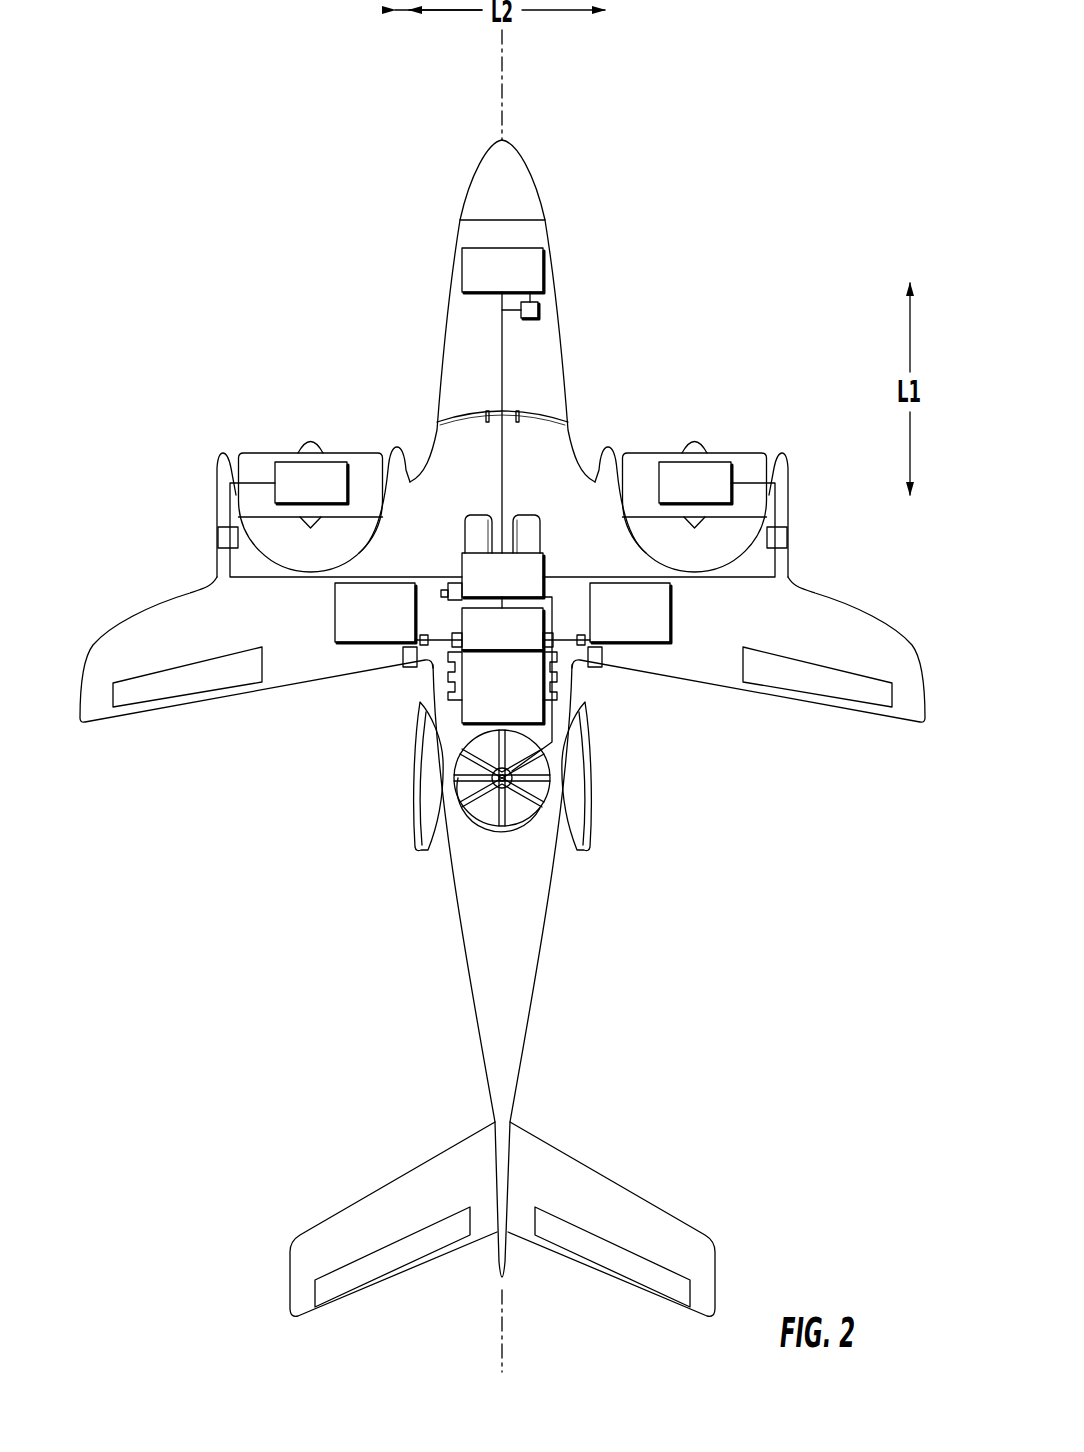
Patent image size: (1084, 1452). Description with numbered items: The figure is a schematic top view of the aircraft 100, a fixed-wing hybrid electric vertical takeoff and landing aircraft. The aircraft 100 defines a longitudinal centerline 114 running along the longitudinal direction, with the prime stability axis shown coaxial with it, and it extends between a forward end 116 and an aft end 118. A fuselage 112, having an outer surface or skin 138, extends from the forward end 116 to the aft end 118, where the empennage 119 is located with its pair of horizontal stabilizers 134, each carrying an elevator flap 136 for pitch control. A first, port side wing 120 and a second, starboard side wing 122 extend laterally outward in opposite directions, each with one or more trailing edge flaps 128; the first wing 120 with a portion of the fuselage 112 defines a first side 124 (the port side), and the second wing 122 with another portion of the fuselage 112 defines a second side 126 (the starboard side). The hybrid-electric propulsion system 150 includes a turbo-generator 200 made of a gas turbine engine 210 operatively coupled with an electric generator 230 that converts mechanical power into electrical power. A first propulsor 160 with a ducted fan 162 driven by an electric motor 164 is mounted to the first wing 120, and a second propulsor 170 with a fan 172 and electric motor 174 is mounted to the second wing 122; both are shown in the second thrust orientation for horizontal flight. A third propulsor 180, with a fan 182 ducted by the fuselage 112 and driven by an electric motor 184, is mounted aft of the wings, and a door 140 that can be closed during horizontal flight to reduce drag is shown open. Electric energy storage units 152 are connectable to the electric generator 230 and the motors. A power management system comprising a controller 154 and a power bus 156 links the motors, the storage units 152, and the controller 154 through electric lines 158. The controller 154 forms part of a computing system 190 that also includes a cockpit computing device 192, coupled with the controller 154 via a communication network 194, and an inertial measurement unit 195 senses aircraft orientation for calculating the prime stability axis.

The aircraft 100 is at (214, 152).
The fuselage 112 is at (558, 338).
The longitudinal centerline 114 is at (504, 100).
The forward end 116 is at (449, 152).
The aft end 118 is at (249, 1277).
The empennage 119 is at (631, 1157).
The first, port side wing 120 is at (159, 622).
The second, starboard side wing 122 is at (858, 635).
The first side 124 is at (185, 321).
The second side 126 is at (813, 306).
The trailing edge flap 128 is at (198, 683).
The horizontal stabilizer 134 is at (392, 1198).
The elevator flap 136 is at (603, 1258).
The outer surface or skin 138 is at (477, 949).
The door 140 is at (580, 755).
The hybrid-electric propulsion system 150 is at (451, 467).
The electric energy storage unit 152 is at (392, 627).
The controller 154 is at (520, 592).
The power bus 156 is at (437, 561).
The electric line 158 is at (565, 577).
The first propulsor 160 is at (282, 412).
The fan 162 is at (262, 453).
The electric motor 164 is at (328, 497).
The second propulsor 170 is at (708, 411).
The fan 172 is at (739, 453).
The electric motor 174 is at (713, 497).
The third propulsor 180 is at (471, 831).
The fan 182 is at (465, 756).
The electric motor 184 is at (511, 790).
The computing system 190 is at (457, 338).
The computing device 192 is at (518, 285).
The communication network 194 is at (503, 406).
The Inertial Measurement Unit (IMU) 195 is at (541, 310).
The turbo-generator 200 is at (440, 679).
The gas turbine engine 210 is at (519, 702).
The electric generator 230 is at (519, 643).